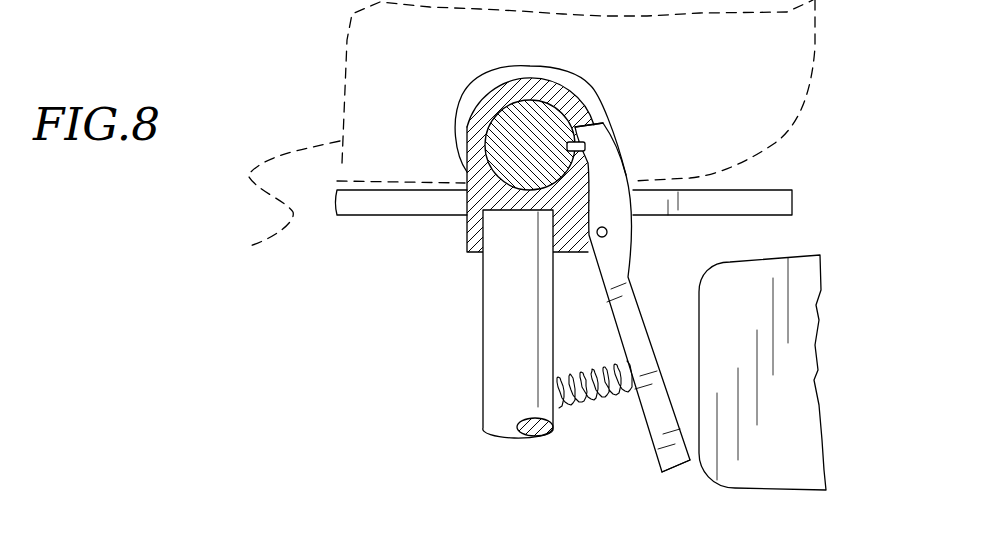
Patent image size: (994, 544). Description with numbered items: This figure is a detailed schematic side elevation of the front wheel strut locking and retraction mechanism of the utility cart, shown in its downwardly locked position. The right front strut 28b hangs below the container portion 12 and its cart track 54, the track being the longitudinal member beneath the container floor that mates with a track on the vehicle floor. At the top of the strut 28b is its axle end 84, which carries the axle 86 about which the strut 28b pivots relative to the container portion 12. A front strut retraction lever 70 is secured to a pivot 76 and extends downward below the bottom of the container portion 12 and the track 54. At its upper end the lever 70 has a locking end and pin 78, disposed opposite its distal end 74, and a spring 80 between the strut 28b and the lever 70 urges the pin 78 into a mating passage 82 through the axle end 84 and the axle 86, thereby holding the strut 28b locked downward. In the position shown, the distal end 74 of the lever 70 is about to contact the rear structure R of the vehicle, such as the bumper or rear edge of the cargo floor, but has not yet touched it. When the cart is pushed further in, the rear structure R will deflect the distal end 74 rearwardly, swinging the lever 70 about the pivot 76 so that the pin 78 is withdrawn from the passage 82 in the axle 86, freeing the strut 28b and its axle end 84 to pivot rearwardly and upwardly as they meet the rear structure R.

The container portion 12 is at (507, 131).
The cart track 54 is at (372, 216).
The axle end 84 is at (483, 100).
The axle 86 is at (487, 130).
The right front strut 28b is at (490, 352).
The front strut retraction lever 70 is at (634, 300).
The distal end 74 is at (675, 472).
The mating passage 82 is at (600, 128).
The locking end and pin 78 is at (588, 162).
The pivot 76 is at (607, 233).
The spring 80 is at (606, 400).
The rear structure R is at (802, 372).